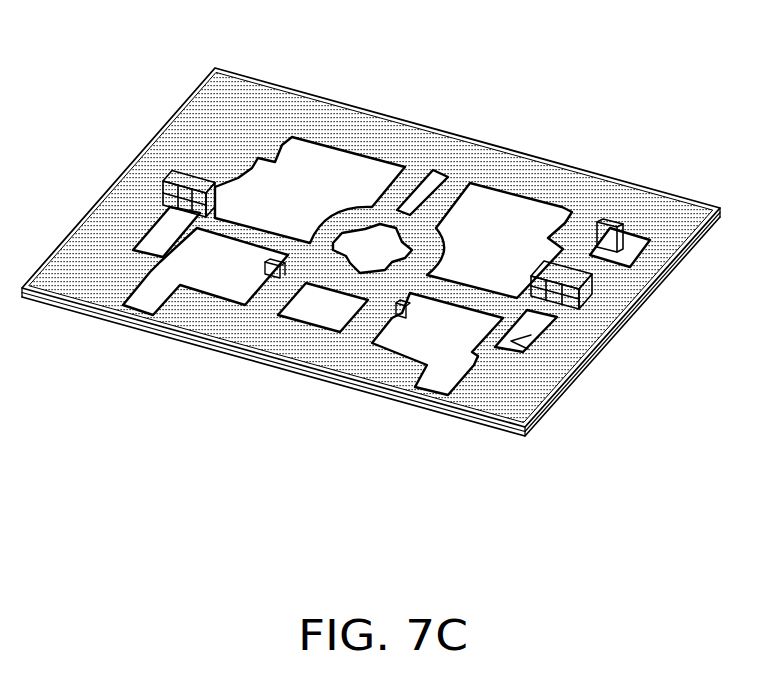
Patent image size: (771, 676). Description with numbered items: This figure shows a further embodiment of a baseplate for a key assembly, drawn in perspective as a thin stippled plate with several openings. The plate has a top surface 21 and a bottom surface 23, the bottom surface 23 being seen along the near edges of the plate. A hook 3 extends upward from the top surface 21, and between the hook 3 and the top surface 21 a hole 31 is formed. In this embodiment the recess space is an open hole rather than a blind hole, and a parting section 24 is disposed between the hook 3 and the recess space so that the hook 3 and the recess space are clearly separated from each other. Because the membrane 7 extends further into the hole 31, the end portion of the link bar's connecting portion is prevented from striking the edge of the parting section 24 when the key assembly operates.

The membrane 7 is at (212, 71).
The top surface 21 is at (382, 130).
The bottom surface 23 is at (288, 371).
The parting section 24 is at (162, 207).
The hook 3 is at (604, 270).
The hole 31 is at (558, 303).